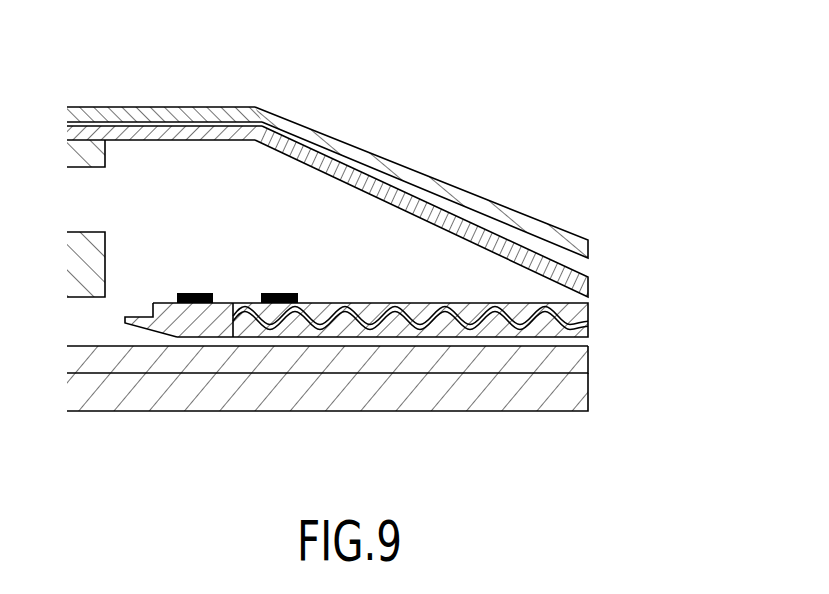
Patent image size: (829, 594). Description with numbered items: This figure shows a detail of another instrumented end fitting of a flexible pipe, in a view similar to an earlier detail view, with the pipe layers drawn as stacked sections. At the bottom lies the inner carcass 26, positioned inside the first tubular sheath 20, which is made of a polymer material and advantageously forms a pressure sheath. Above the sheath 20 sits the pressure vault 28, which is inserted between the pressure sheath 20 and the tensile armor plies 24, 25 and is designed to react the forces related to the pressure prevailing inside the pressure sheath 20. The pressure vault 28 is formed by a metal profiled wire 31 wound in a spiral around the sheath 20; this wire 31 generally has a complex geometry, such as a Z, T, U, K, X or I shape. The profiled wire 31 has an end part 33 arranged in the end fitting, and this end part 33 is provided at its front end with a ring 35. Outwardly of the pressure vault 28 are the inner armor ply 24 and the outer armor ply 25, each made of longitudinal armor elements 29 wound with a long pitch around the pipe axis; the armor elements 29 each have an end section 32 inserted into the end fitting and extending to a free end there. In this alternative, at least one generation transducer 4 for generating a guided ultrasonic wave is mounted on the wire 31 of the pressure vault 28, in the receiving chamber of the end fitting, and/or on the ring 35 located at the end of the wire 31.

The transducer 4 is at (197, 293).
The first tubular sheath 20 is at (597, 362).
The inner armor ply 24 is at (583, 277).
The outer armor ply 25 is at (582, 241).
The inner carcass 26 is at (582, 393).
The pressure vault 28 is at (584, 316).
The armor elements 29 is at (366, 90).
The profiled wire 31 is at (364, 357).
The end section 32 is at (154, 98).
The end part 33 is at (548, 293).
The ring 35 is at (188, 329).